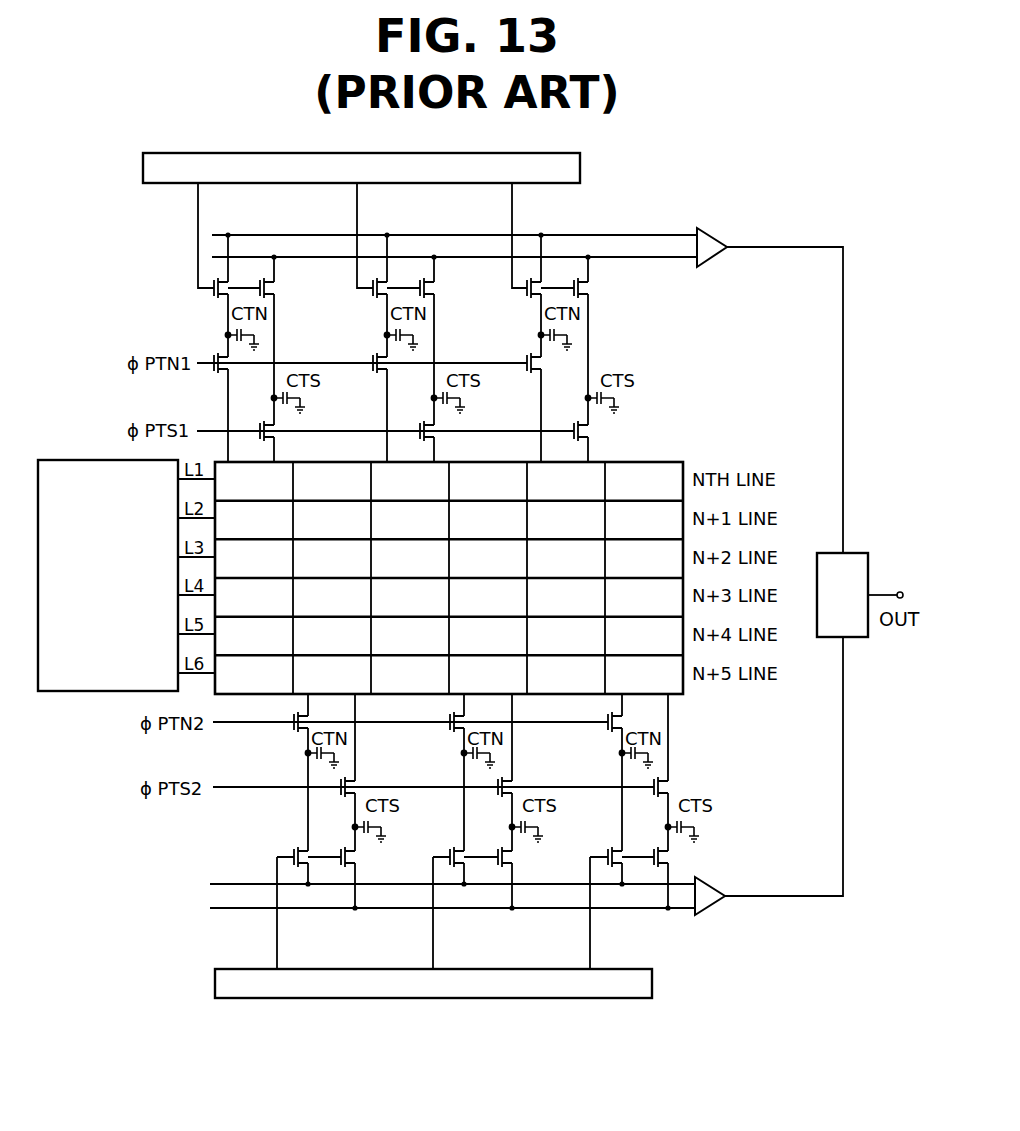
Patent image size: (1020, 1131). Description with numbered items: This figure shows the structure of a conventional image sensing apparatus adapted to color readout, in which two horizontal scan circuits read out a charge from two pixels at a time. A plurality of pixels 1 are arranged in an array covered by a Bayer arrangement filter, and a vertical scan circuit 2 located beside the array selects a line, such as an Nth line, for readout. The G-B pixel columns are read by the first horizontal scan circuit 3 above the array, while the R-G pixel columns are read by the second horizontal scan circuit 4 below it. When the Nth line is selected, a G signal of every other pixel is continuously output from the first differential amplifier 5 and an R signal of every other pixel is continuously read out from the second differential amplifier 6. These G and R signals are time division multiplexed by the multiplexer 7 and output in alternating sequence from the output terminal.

The pixels 1 is at (673, 459).
The vertical scan circuit 2 is at (97, 693).
The first horizontal scan circuit 3 is at (582, 172).
The second horizontal scan circuit 4 is at (655, 985).
The first differential amplifier 5 is at (714, 233).
The second differential amplifier 6 is at (720, 906).
The multiplexer 7 is at (853, 554).